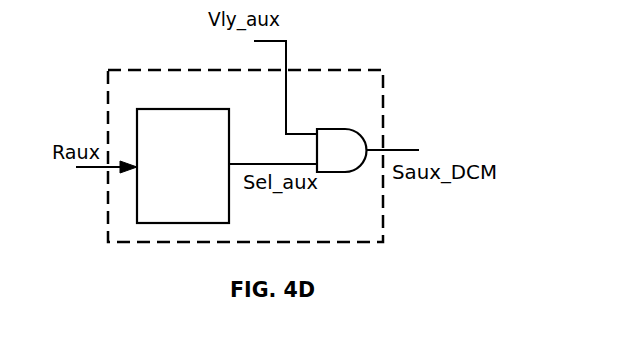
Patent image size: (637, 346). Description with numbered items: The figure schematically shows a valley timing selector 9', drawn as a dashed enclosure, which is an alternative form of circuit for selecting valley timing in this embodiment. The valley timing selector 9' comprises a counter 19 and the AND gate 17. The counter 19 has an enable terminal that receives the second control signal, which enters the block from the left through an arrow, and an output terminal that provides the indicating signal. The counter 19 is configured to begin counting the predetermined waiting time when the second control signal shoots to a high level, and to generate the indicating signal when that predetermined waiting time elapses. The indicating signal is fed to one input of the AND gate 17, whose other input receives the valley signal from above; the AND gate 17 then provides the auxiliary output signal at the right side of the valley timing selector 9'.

The valley timing selector 9' is at (248, 138).
The counter 19 is at (183, 153).
The AND gate 17 is at (341, 136).